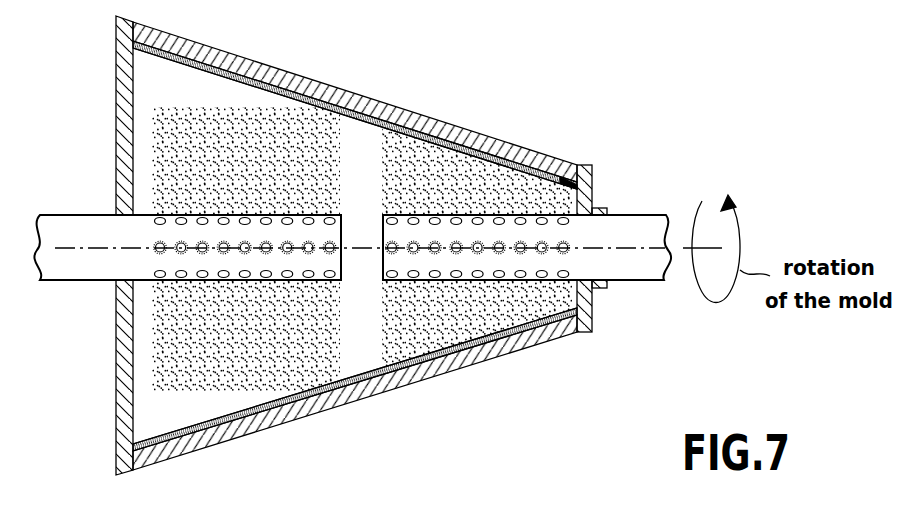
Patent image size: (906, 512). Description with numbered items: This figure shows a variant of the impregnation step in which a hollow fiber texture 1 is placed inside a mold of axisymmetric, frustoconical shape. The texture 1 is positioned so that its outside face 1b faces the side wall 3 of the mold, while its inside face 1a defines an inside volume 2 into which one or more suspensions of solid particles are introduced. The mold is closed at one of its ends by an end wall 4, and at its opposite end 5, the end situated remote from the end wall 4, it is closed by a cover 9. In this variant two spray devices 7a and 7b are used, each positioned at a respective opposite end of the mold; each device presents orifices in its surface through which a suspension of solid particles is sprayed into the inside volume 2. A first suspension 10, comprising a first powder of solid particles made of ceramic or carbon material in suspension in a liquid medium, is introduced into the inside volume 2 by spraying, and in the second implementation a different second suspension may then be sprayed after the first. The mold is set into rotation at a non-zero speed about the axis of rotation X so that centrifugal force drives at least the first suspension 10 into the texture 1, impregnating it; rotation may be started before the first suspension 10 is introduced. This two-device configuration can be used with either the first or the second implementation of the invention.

The fiber texture 1 is at (358, 240).
The inside face 1a is at (201, 70).
The outside face 1b is at (233, 56).
The inside volume 2 is at (166, 420).
The side wall 3 is at (537, 158).
The end wall 4 is at (117, 190).
The end of the mold 5 is at (575, 187).
The spray device 7a is at (641, 268).
The spray device 7b is at (58, 267).
The cover 9 is at (593, 192).
The first suspension 10 is at (170, 128).
The axis of rotation X is at (687, 247).